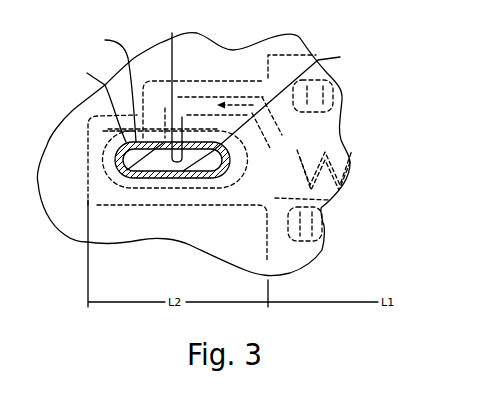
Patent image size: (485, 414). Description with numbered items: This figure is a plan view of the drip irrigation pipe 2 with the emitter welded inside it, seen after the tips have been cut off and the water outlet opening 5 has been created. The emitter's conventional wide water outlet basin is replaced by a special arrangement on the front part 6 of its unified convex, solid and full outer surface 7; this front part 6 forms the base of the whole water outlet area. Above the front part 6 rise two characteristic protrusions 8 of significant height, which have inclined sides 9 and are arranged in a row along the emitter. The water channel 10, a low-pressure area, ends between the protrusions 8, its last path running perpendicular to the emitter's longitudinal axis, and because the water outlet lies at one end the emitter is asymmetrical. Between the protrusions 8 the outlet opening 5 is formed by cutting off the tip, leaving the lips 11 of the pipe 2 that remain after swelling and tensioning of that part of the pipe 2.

The pipe 2 is at (250, 52).
The water outlet opening 5 is at (172, 33).
The front part 6 is at (100, 124).
The outer surface 7 is at (330, 200).
The protrusions 8 is at (222, 102).
The inclined sides 9 is at (101, 103).
The water channel 10 is at (195, 105).
The lips 11 is at (232, 157).